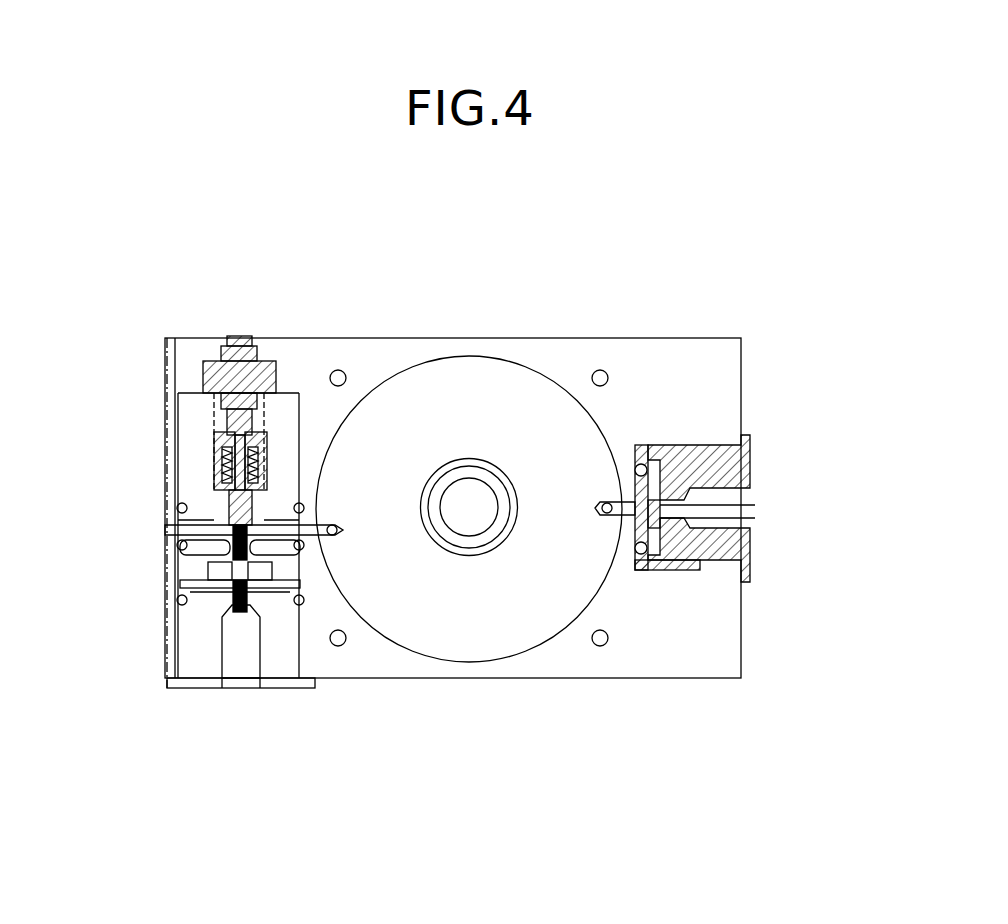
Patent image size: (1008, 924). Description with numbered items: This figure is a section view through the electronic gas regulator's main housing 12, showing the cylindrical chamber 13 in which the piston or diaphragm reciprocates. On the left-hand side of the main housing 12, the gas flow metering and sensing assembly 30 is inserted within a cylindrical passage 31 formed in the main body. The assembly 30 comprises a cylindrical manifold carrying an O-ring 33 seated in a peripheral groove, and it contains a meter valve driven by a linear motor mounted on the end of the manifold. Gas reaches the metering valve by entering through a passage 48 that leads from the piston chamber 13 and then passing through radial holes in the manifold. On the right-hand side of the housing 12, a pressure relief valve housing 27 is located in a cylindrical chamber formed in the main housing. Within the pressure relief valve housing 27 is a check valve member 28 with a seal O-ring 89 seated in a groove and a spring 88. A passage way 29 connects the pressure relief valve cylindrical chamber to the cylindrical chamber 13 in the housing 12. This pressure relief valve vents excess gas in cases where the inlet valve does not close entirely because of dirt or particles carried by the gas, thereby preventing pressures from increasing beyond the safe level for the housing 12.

The main housing 12 is at (741, 357).
The cylindrical chamber 13 is at (567, 456).
The pressure relief valve housing 27 is at (752, 453).
The check valve member 28 is at (756, 505).
The passage way 29 is at (627, 515).
The gas flow metering and sensing assembly 30 is at (178, 450).
The cylindrical passage 31 is at (187, 349).
The O-ring 33 is at (177, 508).
The passage 48 is at (313, 532).
The spring 88 is at (690, 528).
The seal O-ring 89 is at (690, 565).